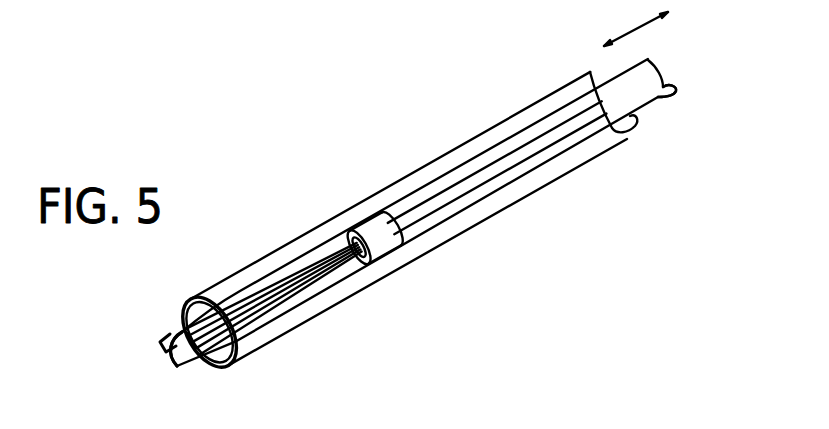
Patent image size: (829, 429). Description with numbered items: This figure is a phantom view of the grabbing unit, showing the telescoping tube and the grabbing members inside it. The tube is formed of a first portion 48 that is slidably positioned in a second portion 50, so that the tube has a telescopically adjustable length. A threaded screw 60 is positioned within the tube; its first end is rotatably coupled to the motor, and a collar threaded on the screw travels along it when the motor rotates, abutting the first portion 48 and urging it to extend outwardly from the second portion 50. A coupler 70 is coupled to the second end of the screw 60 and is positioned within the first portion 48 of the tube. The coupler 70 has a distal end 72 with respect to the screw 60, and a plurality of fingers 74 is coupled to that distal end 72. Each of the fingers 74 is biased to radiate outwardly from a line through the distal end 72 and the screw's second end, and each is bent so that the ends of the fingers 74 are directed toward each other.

The first portion 48 is at (662, 103).
The second portion 50 is at (462, 233).
The screw 60 is at (518, 150).
The coupler 70 is at (386, 214).
The distal end 72 is at (358, 236).
The fingers 74 is at (170, 334).